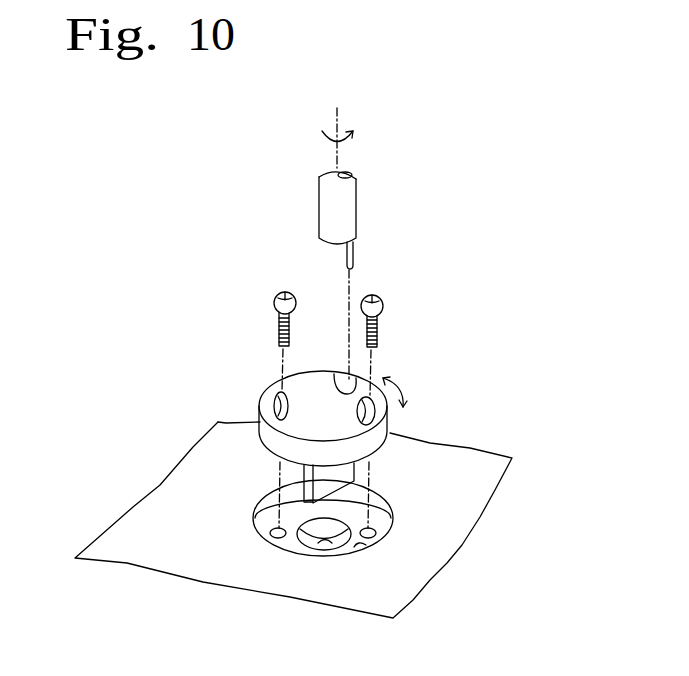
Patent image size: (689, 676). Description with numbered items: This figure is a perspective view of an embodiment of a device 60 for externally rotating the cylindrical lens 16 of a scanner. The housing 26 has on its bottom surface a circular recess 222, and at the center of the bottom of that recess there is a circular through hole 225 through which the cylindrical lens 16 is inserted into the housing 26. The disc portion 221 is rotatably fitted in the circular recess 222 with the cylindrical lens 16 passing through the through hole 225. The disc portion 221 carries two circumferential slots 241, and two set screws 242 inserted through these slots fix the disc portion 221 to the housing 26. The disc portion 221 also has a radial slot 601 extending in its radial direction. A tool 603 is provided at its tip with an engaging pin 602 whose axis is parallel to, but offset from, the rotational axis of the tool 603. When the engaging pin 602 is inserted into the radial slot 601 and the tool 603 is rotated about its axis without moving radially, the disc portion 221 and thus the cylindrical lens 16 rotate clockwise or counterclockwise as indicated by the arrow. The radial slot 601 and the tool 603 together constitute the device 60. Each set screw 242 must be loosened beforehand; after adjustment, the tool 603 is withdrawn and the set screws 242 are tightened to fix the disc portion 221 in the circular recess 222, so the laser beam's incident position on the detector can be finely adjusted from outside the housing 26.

The device for externally rotating the cylindrical lens 60 is at (343, 244).
The tool 603 is at (347, 207).
The engaging pin 602 is at (343, 260).
The set screw 242 is at (274, 302).
The disc portion 221 is at (262, 395).
The radial slot 601 is at (350, 377).
The circumferential slot 241 is at (276, 405).
The housing 26 is at (172, 507).
The cylindrical lens 16 is at (255, 510).
The circular through hole 225 is at (332, 550).
The circular recess 222 is at (360, 546).